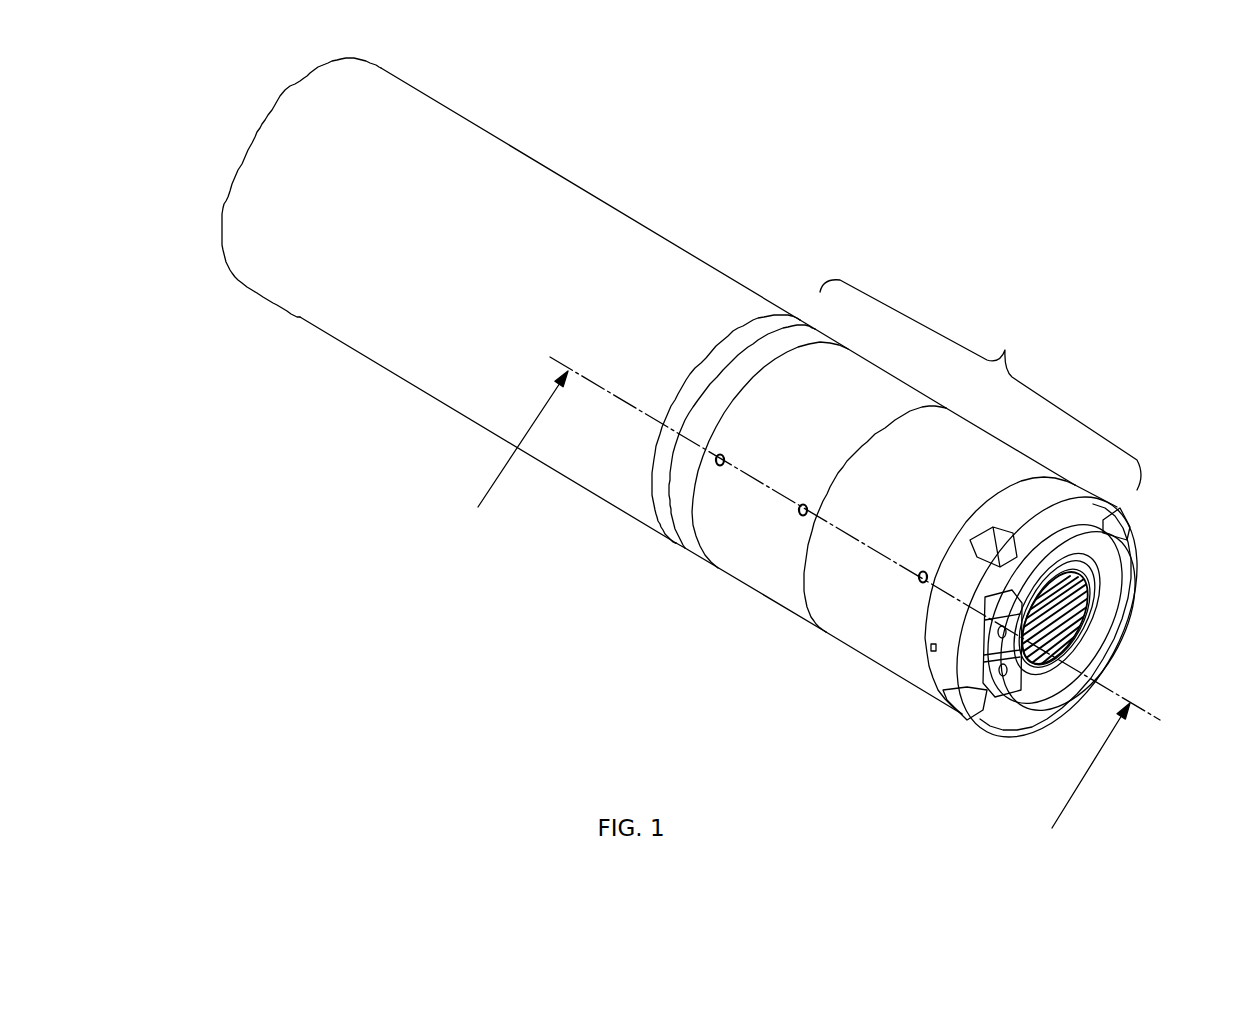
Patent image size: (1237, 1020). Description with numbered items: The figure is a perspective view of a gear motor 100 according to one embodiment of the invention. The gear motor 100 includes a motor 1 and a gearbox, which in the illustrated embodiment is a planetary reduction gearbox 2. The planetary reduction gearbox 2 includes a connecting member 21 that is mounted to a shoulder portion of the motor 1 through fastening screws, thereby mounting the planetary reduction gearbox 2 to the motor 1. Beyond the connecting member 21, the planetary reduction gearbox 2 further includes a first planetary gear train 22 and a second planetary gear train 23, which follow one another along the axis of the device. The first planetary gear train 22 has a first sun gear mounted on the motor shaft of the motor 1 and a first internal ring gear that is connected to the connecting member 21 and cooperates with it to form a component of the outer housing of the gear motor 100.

The gear motor 100 is at (698, 443).
The motor 1 is at (443, 136).
The planetary reduction gearbox 2 is at (913, 555).
The connecting member 21 is at (685, 520).
The first planetary gear train 22 is at (763, 557).
The second planetary gear train 23 is at (989, 586).